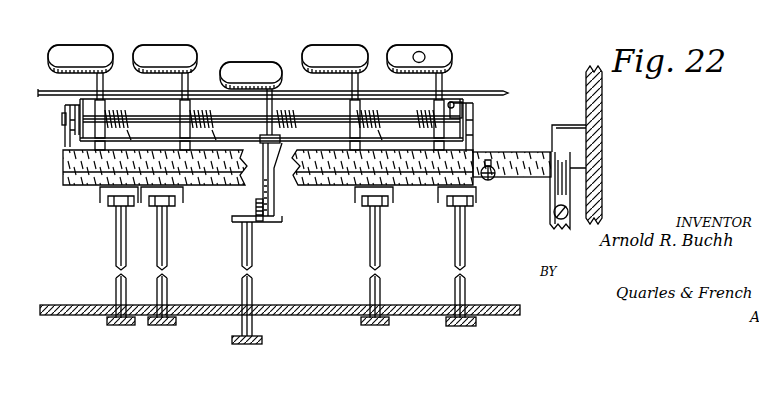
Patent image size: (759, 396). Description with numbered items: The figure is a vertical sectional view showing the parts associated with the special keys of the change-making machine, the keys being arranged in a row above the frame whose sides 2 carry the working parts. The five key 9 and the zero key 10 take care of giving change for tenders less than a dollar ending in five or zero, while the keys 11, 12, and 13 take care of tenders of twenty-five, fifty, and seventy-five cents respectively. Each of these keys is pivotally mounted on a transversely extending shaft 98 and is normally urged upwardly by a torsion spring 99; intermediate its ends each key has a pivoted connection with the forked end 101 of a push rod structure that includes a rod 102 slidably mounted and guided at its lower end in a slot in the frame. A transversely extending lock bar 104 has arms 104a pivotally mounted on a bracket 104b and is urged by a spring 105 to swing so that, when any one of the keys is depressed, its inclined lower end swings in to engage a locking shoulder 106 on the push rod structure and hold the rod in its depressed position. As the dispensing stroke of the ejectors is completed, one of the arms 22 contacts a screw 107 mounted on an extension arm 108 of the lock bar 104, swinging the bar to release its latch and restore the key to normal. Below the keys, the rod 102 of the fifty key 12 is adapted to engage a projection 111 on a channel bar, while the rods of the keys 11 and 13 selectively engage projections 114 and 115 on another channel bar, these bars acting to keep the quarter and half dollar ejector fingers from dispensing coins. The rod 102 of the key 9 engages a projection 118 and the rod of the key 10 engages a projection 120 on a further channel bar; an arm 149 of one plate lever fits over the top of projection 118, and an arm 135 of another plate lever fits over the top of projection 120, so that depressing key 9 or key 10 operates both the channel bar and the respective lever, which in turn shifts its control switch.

The sides 2 is at (602, 127).
The special key 9 is at (102, 50).
The special key 10 is at (437, 53).
The special key 11 is at (193, 52).
The special key 12 is at (273, 70).
The special key 13 is at (355, 52).
The arm 22 is at (556, 140).
The shaft 98 is at (342, 113).
The torsion spring 99 is at (212, 110).
The forked end 101 is at (275, 170).
The push rod 102 is at (117, 229).
The lock bar 104 is at (333, 176).
The arms 104a is at (66, 117).
The bracket 104b is at (452, 96).
The spring 105 is at (489, 182).
The locking shoulder 106 is at (257, 183).
The screw 107 is at (550, 218).
The extension arm 108 is at (552, 191).
The projection 111 is at (266, 338).
The projection 114 is at (170, 323).
The projection 115 is at (380, 321).
The projection 118 is at (134, 325).
The projection 120 is at (457, 323).
The arm 135 is at (477, 322).
The arm 149 is at (106, 321).